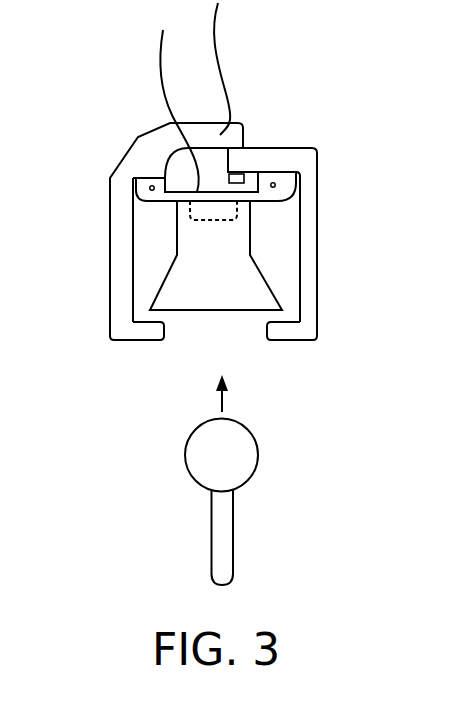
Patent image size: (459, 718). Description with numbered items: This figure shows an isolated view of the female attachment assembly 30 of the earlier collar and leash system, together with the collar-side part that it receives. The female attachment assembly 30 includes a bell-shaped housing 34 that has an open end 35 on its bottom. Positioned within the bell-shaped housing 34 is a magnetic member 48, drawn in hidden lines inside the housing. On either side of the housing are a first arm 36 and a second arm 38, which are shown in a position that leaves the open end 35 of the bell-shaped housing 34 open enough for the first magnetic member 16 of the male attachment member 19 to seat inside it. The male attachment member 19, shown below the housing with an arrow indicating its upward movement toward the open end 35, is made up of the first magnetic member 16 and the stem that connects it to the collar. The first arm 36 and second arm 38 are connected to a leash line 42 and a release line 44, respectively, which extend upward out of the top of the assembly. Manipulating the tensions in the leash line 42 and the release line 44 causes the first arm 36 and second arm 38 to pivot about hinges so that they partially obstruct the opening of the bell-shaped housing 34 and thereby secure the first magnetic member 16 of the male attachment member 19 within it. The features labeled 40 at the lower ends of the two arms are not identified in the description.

The first magnetic member 16 is at (258, 455).
The male attachment member 19 is at (163, 527).
The female attachment assembly 30 is at (386, 142).
The bell-shaped housing 34 is at (263, 277).
The open end 35 is at (200, 312).
The first arm 36 is at (115, 210).
The second arm 38 is at (308, 218).
The mounting feet 40 is at (135, 341).
The leash line 42 is at (221, 52).
The release line 44 is at (160, 70).
The first magnetic member 48 is at (207, 222).